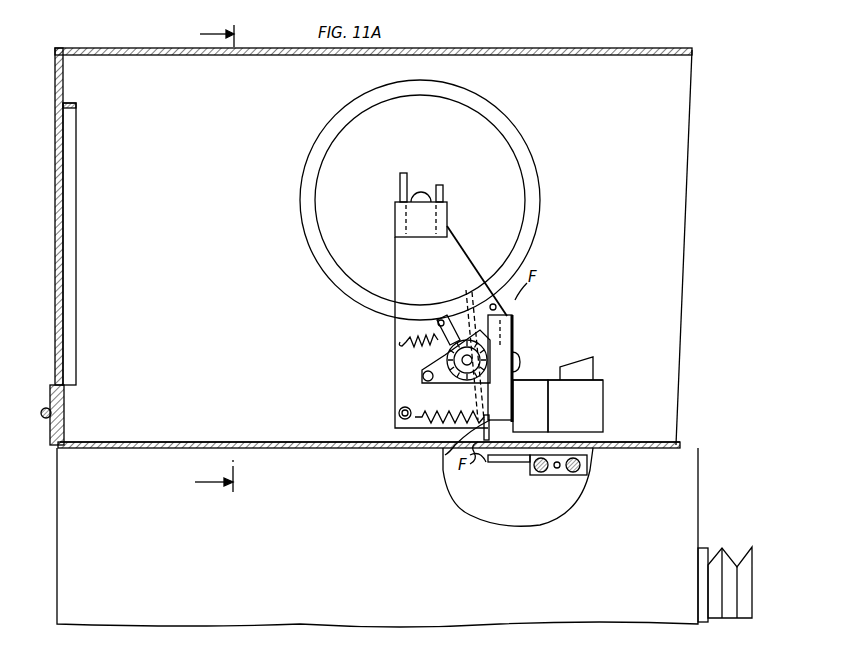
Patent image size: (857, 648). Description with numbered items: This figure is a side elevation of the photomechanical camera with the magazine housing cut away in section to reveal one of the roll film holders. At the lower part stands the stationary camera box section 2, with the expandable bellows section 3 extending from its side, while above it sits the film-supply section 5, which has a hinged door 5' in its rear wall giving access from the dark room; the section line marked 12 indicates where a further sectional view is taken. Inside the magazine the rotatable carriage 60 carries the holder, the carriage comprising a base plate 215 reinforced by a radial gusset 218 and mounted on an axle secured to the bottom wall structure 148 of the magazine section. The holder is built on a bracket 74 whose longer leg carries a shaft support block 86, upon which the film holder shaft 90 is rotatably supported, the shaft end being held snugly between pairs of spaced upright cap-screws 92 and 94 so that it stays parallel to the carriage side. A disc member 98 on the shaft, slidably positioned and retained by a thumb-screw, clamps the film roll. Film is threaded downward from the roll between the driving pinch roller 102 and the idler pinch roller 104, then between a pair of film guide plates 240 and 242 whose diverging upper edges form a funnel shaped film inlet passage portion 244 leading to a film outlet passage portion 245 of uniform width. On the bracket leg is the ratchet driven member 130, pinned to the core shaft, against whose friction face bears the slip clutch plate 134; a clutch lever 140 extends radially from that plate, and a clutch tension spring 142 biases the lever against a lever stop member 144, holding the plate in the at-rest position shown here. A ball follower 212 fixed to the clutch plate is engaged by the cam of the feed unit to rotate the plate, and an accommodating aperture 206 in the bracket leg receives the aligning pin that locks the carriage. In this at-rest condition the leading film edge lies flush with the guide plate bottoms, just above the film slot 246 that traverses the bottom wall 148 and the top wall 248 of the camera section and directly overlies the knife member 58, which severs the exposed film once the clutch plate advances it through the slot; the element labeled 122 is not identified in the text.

The stationary camera box section 2 is at (57, 546).
The expandable bellows section 3 is at (728, 548).
The film-supply section 5 is at (357, 246).
The hinged door 5' is at (45, 244).
The section line 12 is at (227, 259).
The knife member 58 is at (492, 464).
The carriage 60 is at (575, 406).
The bracket 74 is at (400, 252).
The shaft support block 86 is at (398, 216).
The film holder shaft 90 is at (422, 190).
The upright cap-screws 92 is at (400, 185).
The upright cap-screws 94 is at (443, 190).
The disc member 98 is at (318, 160).
The driving pinch roller 102 is at (492, 300).
The idler pinch roller 104 is at (518, 360).
The slide member 122 is at (512, 326).
The ratchet driven member 130 is at (440, 386).
The slip clutch plate 134 is at (446, 358).
The clutch lever 140 is at (446, 315).
The clutch tension spring 142 is at (418, 336).
The lever stop member 144 is at (438, 316).
The bottom wall structure 148 is at (205, 441).
The accommodating aperture 206 is at (399, 413).
The ball follower 212 is at (424, 378).
The base plate 215 is at (600, 382).
The radial gusset 218 is at (567, 366).
The film guide plate 240 is at (440, 450).
The film guide plate 242 is at (512, 418).
The funnel shaped film inlet passage portion 244 is at (468, 418).
The film outlet passage portion 245 is at (496, 440).
The film slot 246 is at (484, 465).
The top wall 248 is at (590, 466).